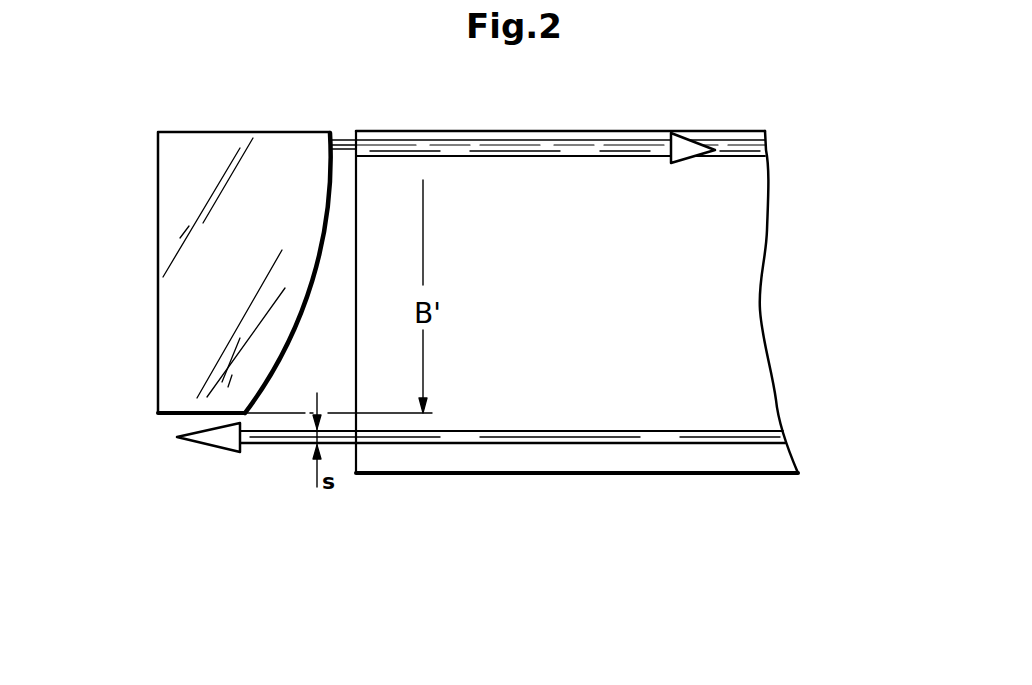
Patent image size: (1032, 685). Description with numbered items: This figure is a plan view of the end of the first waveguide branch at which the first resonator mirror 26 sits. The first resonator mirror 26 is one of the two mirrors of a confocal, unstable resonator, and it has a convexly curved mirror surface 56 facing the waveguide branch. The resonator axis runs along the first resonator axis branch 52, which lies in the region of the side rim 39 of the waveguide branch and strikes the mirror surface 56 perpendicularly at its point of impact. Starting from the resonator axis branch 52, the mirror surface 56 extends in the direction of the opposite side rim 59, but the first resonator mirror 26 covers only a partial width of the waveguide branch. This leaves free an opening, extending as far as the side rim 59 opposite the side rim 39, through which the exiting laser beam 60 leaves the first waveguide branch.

The first resonator mirror 26 is at (195, 182).
The first resonator axis branch 52 is at (347, 148).
The side rim 39 is at (672, 131).
The convexly curved mirror surface 56 is at (293, 332).
The exiting laser beam 60 is at (281, 449).
The opposite side rim 59 is at (670, 474).